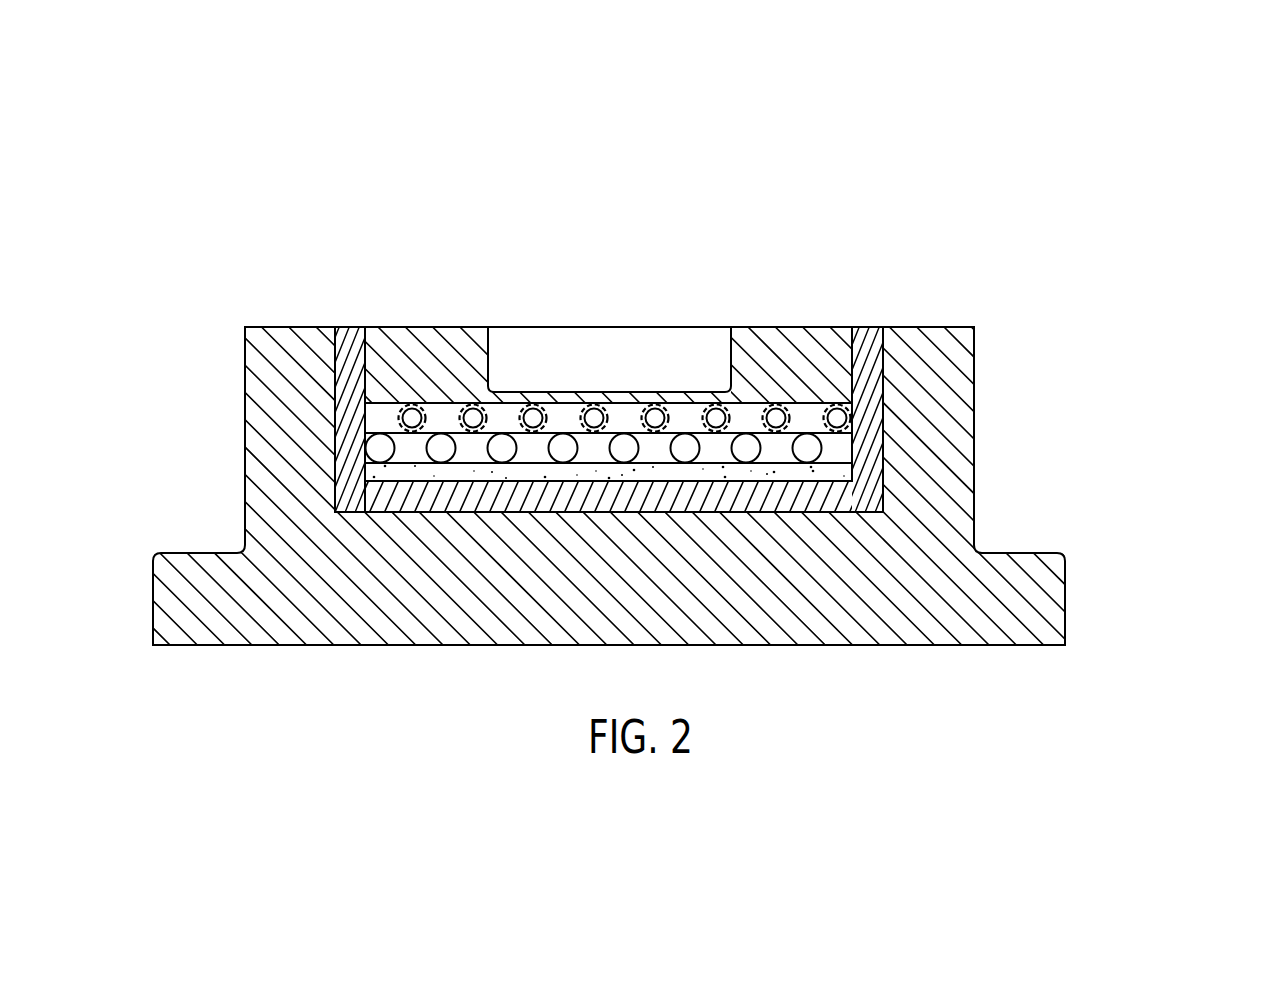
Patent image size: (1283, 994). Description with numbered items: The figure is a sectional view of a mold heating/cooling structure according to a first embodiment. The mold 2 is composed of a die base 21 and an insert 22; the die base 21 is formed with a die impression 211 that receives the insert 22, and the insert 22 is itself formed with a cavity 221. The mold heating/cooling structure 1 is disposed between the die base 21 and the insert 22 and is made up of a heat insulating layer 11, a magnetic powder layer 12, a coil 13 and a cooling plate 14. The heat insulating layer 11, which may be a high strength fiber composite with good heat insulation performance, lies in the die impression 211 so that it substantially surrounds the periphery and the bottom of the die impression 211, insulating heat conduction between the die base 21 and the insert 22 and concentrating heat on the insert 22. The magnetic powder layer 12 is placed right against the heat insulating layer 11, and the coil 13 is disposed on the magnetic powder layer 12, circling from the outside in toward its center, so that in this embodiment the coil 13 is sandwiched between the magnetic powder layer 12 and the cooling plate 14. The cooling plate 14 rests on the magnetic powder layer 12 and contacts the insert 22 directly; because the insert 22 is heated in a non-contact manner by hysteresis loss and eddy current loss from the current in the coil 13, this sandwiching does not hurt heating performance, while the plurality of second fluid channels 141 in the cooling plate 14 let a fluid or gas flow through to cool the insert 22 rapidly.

The mold heating/cooling structure 1 is at (542, 287).
The heat insulating layer 11 is at (345, 327).
The magnetic powder layer 12 is at (380, 473).
The coil 13 is at (352, 408).
The cooling plate 14 is at (388, 406).
The second fluid channels 141 is at (414, 410).
The mold 2 is at (641, 392).
The die base 21 is at (1022, 583).
The die impression 211 is at (883, 425).
The insert 22 is at (793, 353).
The cavity 221 is at (618, 352).